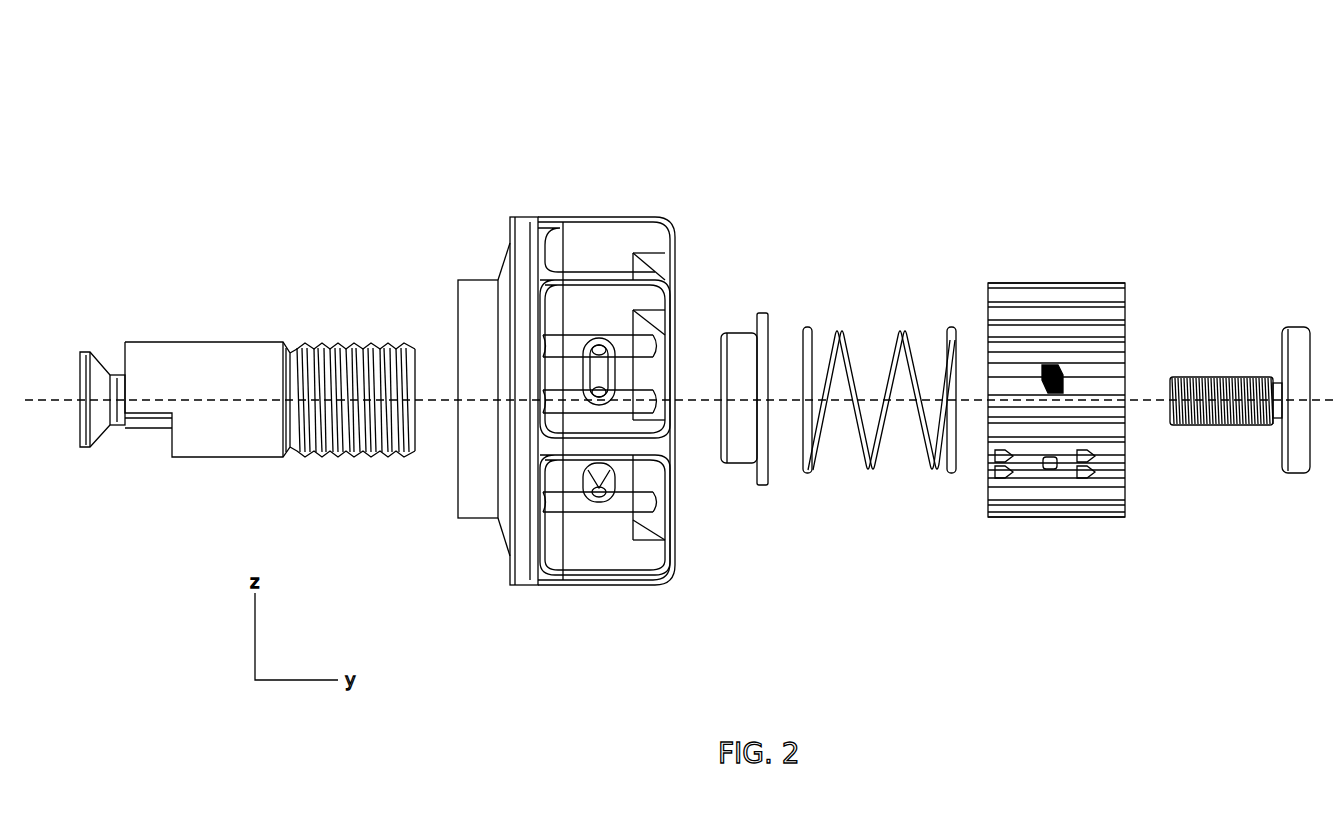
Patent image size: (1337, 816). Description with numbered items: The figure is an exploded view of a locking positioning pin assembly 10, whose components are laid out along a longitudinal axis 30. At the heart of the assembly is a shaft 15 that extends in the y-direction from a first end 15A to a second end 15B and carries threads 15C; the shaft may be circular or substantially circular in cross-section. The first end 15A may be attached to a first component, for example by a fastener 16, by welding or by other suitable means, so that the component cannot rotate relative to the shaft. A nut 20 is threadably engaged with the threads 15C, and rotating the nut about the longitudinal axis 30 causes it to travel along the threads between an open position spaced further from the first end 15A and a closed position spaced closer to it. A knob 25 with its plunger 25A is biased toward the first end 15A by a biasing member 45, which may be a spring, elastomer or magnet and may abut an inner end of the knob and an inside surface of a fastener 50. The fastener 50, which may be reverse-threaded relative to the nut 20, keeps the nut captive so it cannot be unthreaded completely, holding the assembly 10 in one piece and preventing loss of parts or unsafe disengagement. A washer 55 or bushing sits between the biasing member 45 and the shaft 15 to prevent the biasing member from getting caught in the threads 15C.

The locking positioning pin assembly 10 is at (185, 125).
The shaft 15 is at (183, 368).
The first end 15A is at (120, 318).
The second end 15B is at (408, 318).
The threads 15C is at (317, 357).
The fastener 16 is at (93, 412).
The nut 20 is at (1077, 495).
The knob 25 is at (615, 550).
The plunger 25A is at (472, 495).
The longitudinal axis 30 is at (707, 396).
The biasing member 45 is at (872, 480).
The fastener 50 is at (1245, 425).
The washer 55 is at (738, 455).